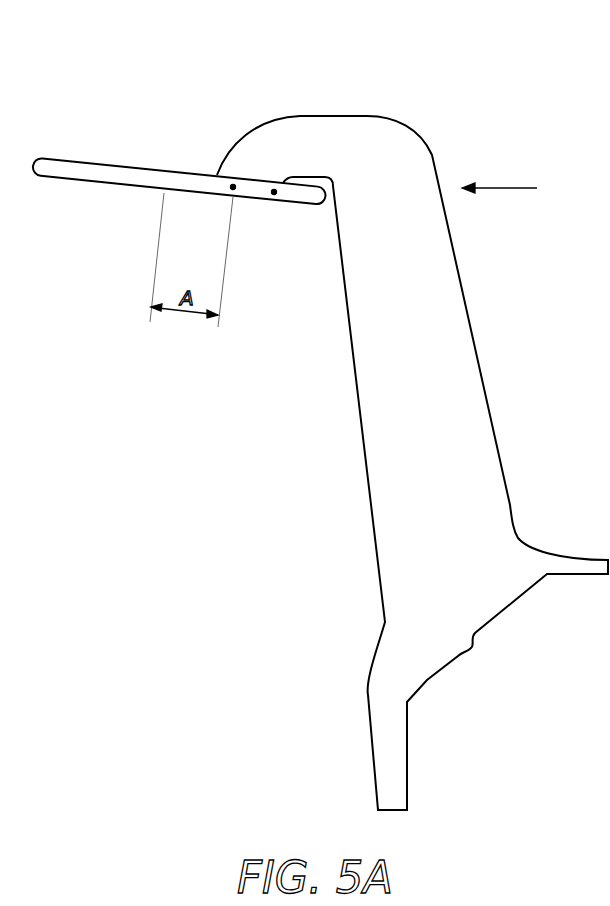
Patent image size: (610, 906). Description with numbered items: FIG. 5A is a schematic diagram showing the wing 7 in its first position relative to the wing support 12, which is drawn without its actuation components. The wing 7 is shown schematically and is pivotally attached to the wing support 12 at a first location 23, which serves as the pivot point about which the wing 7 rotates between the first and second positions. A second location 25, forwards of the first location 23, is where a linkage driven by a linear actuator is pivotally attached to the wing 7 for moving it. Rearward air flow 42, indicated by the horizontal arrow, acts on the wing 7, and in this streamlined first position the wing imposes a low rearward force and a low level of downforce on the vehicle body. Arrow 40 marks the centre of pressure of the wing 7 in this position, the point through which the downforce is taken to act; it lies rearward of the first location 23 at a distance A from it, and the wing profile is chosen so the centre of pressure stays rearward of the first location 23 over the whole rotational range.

The wing 7 is at (54, 126).
The wing support 12 is at (466, 352).
The first location 23 is at (233, 187).
The second location 25 is at (274, 192).
The arrow 40 is at (168, 169).
The rearward air flow 42 is at (510, 188).